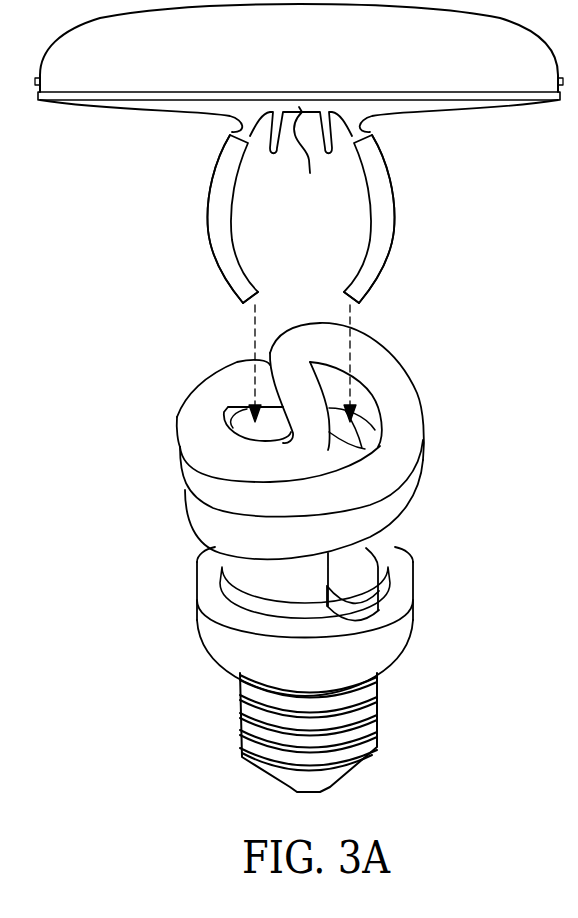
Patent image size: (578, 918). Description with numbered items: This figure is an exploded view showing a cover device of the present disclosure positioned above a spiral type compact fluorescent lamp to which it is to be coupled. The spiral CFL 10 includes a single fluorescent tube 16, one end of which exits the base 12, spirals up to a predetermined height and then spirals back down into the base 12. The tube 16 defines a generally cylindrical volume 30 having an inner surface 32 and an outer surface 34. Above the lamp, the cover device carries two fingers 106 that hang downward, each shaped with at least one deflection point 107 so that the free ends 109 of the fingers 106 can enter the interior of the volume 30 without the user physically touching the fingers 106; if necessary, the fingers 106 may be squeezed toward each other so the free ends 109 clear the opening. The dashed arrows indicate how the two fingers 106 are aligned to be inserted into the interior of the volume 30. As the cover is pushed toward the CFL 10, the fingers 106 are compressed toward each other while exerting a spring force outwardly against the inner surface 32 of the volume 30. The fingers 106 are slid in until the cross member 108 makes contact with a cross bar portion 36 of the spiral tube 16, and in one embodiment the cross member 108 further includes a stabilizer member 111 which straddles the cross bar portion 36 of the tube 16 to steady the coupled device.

The spiral CFL 10 is at (428, 622).
The base 12 is at (197, 597).
The fluorescent tube 16 is at (423, 502).
The cylindrical volume 30 is at (283, 440).
The inner surface 32 is at (246, 404).
The outer surface 34 is at (182, 472).
The cross bar portion 36 is at (294, 354).
The fingers 106 is at (227, 163).
The deflection point 107 is at (207, 240).
The cross member 108 is at (310, 153).
The free ends 109 is at (237, 298).
The stabilizer member 111 is at (262, 185).